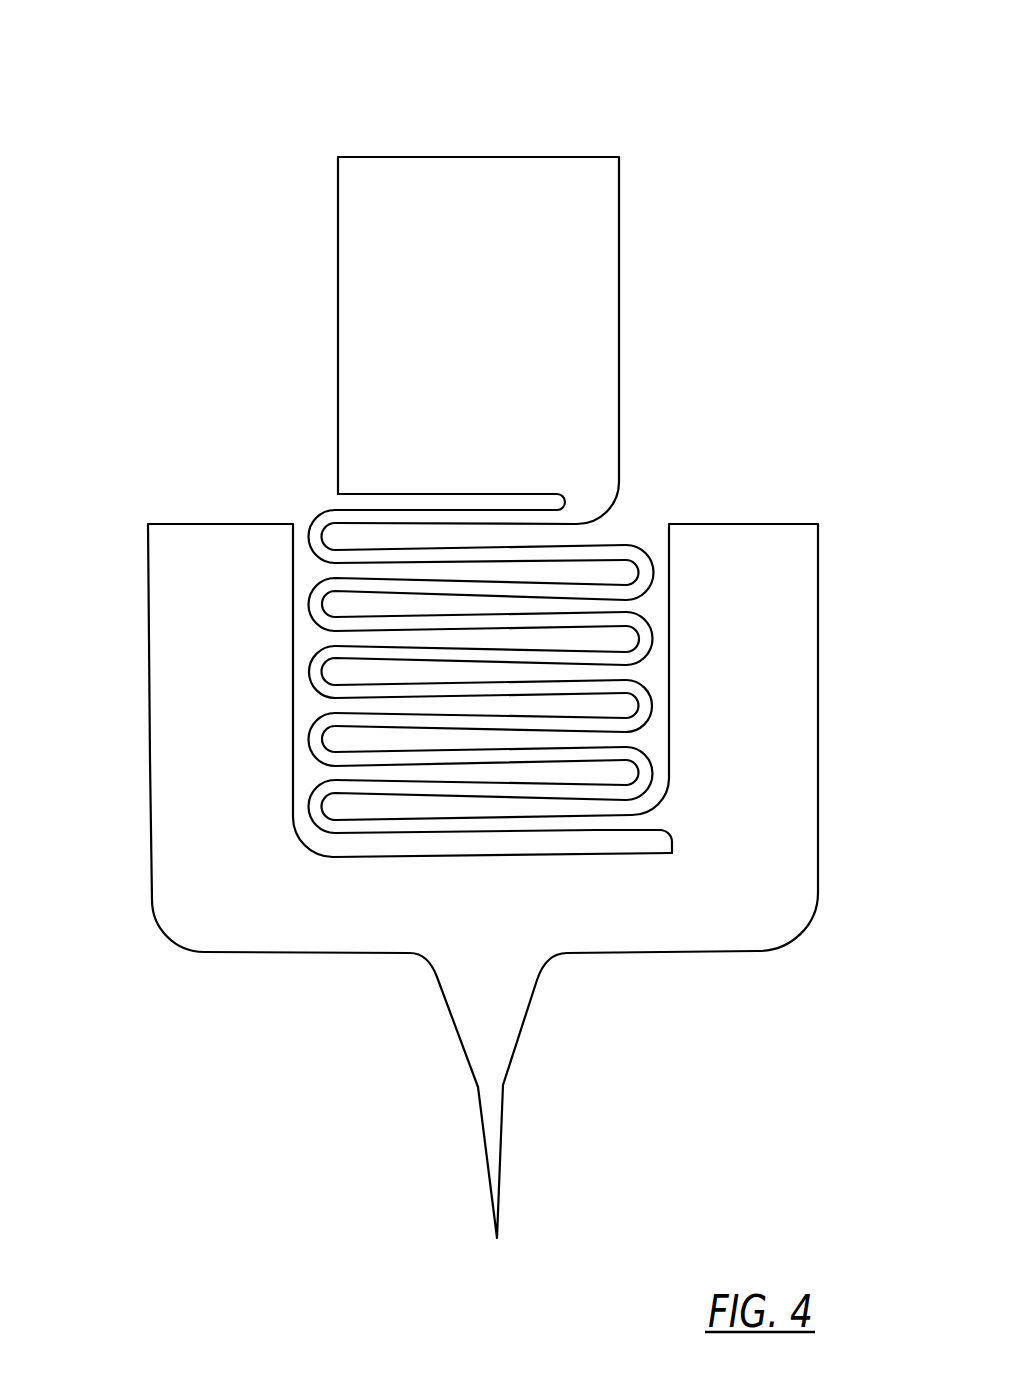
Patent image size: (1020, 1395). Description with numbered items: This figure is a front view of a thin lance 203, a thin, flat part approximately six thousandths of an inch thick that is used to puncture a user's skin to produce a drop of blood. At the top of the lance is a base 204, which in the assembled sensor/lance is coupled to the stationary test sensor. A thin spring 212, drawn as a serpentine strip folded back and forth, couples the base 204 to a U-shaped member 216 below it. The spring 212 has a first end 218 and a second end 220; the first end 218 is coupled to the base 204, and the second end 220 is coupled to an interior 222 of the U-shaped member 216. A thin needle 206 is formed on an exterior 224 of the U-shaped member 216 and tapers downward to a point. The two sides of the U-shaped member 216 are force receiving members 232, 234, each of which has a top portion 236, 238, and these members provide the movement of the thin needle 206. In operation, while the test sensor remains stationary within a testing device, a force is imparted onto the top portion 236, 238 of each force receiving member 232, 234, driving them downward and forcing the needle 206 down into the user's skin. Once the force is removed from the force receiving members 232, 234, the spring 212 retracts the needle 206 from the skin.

The thin lance 203 is at (612, 99).
The base 204 is at (491, 239).
The thin needle 206 is at (484, 1148).
The thin spring 212 is at (317, 512).
The U-shaped member 216 is at (504, 922).
The first end 218 is at (620, 499).
The second end 220 is at (595, 829).
The interior 222 is at (390, 857).
The exterior 224 is at (663, 954).
The force receiving member 232 is at (152, 884).
The force receiving member 234 is at (818, 891).
The top portion 236 is at (189, 524).
The top portion 238 is at (770, 522).